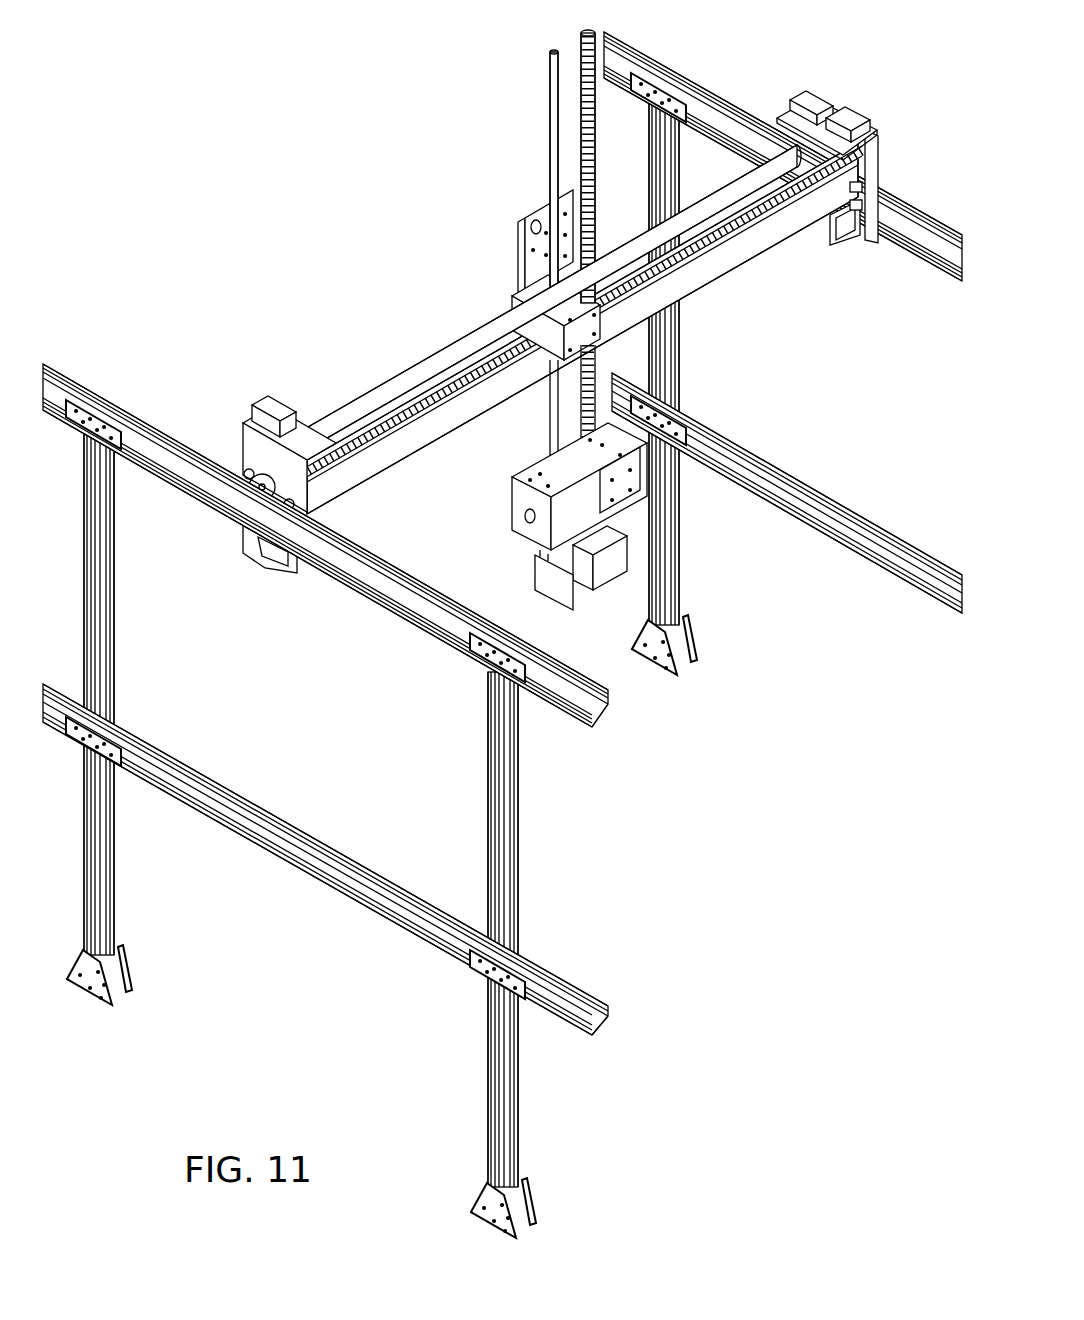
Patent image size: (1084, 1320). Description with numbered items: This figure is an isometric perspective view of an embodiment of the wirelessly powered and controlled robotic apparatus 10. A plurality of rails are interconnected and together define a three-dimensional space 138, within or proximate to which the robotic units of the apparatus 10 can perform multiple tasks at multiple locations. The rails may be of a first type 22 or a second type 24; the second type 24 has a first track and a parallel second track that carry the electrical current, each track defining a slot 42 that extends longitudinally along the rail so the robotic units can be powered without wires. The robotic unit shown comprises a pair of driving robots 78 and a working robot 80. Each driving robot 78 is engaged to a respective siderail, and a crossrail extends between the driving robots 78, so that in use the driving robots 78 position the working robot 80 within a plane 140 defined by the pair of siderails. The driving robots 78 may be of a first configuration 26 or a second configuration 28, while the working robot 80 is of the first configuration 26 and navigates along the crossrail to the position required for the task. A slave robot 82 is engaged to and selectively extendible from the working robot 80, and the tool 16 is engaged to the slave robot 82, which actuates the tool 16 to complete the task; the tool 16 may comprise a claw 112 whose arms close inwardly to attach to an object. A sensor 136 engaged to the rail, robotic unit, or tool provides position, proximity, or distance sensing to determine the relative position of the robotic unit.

The robotic apparatus 10 is at (362, 117).
The tool 16 is at (575, 605).
The first type 22 is at (766, 170).
The second type 24 is at (764, 176).
The first configuration 26 is at (640, 260).
The second configuration 28 is at (877, 130).
The slot 42 is at (352, 547).
The driving robot 78 is at (625, 338).
The working robot 80 is at (515, 298).
The slave robot 82 is at (512, 490).
The claw 112 is at (537, 588).
The sensor 136 is at (653, 78).
The three-dimensional space 138 is at (335, 778).
The plane 140 is at (688, 122).